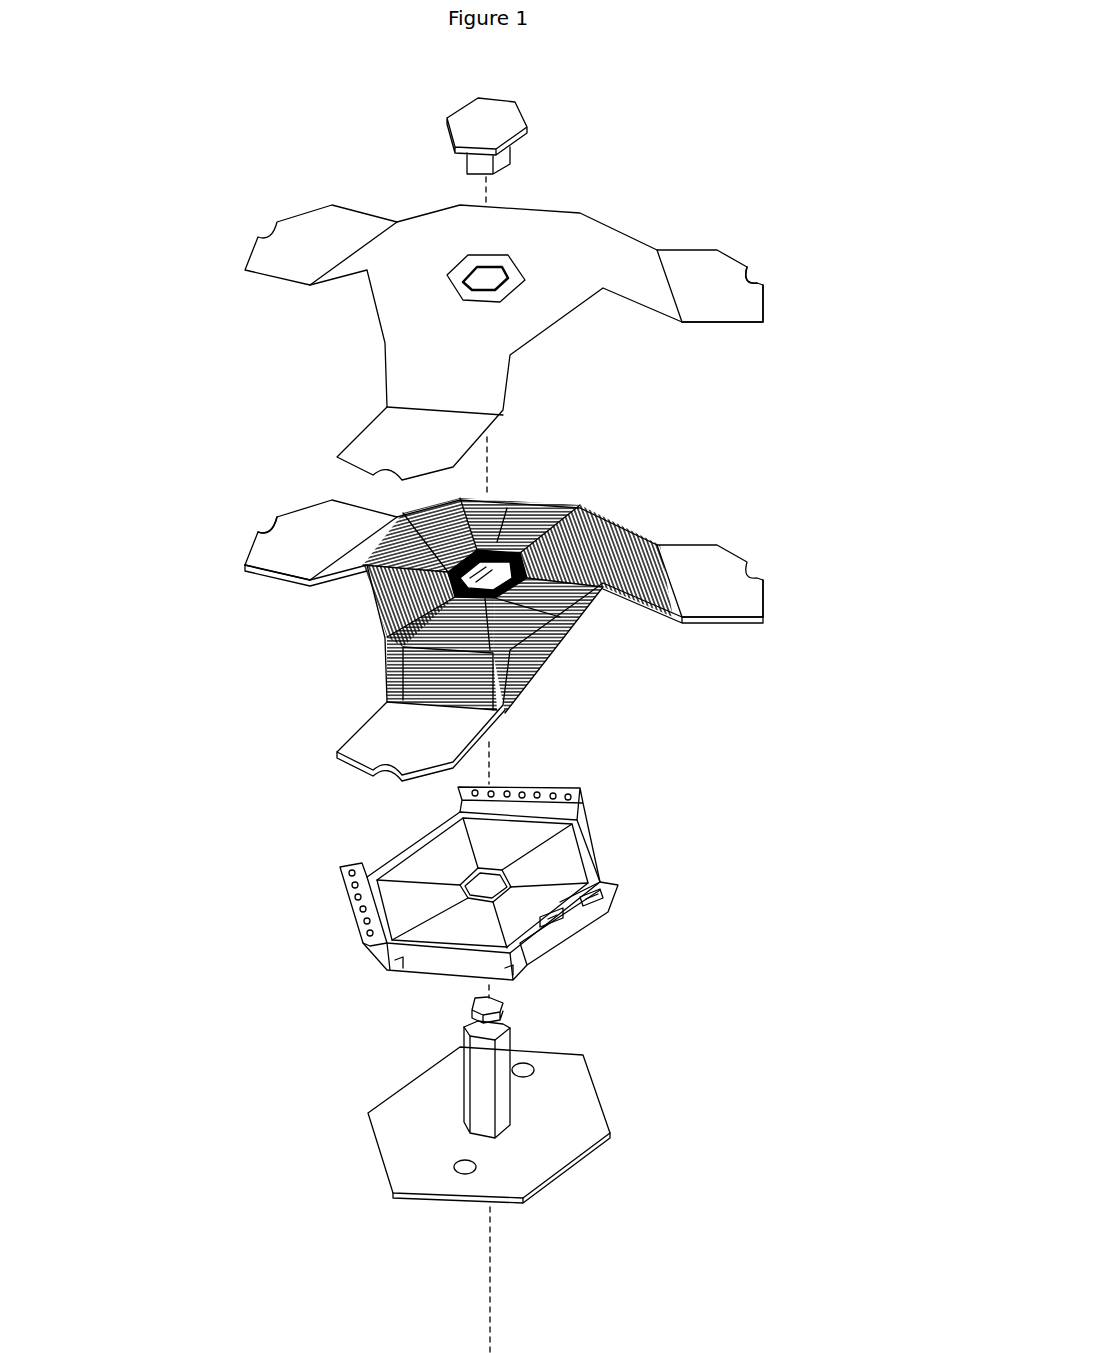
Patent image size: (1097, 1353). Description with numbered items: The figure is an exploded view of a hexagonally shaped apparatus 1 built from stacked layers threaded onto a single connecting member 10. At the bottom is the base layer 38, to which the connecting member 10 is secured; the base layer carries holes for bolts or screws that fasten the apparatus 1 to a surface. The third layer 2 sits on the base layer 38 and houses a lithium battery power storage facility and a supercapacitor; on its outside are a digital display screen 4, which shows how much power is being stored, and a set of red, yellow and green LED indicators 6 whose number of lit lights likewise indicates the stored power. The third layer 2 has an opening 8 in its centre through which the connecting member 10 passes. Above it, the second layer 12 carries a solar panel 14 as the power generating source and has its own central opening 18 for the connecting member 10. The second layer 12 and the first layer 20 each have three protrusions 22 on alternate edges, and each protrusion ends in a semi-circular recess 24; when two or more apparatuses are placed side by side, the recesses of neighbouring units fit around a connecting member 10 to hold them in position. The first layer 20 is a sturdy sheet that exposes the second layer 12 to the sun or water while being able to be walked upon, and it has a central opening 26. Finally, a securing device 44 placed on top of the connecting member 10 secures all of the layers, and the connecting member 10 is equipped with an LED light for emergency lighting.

The apparatus 1 is at (712, 128).
The third layer 2 is at (620, 847).
The digital display screen 4 is at (588, 898).
The LED indicators 6 is at (355, 907).
The opening 8 is at (485, 886).
The connecting member 10 is at (490, 1058).
The second layer 12 is at (593, 632).
The solar panel 14 is at (427, 599).
The opening 18 is at (522, 553).
The first layer 20 is at (344, 321).
The protrusions 22 is at (728, 305).
The semi-circular recess 24 is at (753, 271).
The opening 26 is at (486, 279).
The base layer 38 is at (560, 1127).
The securing device 44 is at (487, 130).